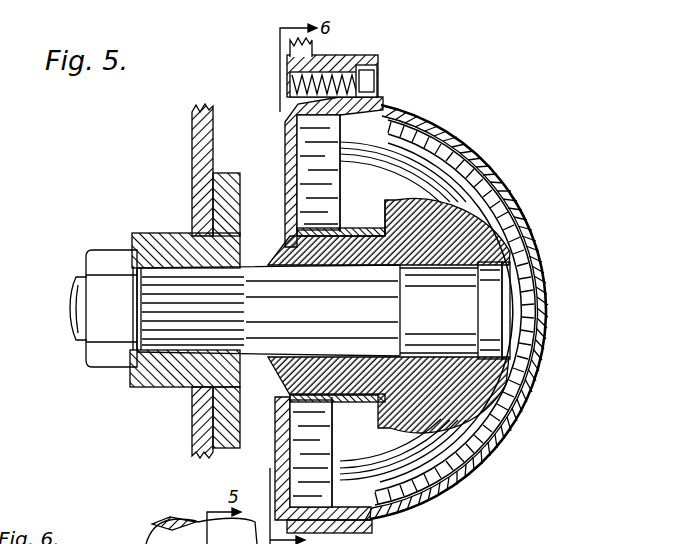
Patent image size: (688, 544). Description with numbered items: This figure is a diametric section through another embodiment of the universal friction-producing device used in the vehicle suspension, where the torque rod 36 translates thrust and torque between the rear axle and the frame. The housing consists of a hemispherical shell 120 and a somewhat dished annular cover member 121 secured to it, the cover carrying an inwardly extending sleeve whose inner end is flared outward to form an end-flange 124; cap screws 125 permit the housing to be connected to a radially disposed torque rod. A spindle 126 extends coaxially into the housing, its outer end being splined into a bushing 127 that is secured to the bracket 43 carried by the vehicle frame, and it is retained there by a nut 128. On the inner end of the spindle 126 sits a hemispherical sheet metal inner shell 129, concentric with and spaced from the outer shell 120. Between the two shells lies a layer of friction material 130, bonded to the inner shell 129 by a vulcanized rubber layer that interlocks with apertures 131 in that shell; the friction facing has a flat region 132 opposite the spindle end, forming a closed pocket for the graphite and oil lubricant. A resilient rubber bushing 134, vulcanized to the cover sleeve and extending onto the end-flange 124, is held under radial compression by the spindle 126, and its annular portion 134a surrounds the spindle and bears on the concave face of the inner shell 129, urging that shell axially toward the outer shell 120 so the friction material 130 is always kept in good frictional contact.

The torque rod 36 is at (313, 47).
The bracket 43 is at (202, 145).
The hemispherical shell 120 is at (486, 464).
The cover member 121 is at (287, 140).
The end-flange 124 is at (383, 210).
The cap screws 125 is at (322, 232).
The spindle 126 is at (235, 386).
The bushing 127 is at (162, 390).
The nut 128 is at (100, 368).
The inner shell 129 is at (392, 164).
The friction material 130 is at (498, 218).
The apertures 131 is at (430, 152).
The flat region 132 is at (526, 318).
The bushing 134 is at (282, 235).
The annular portion 134a is at (420, 445).